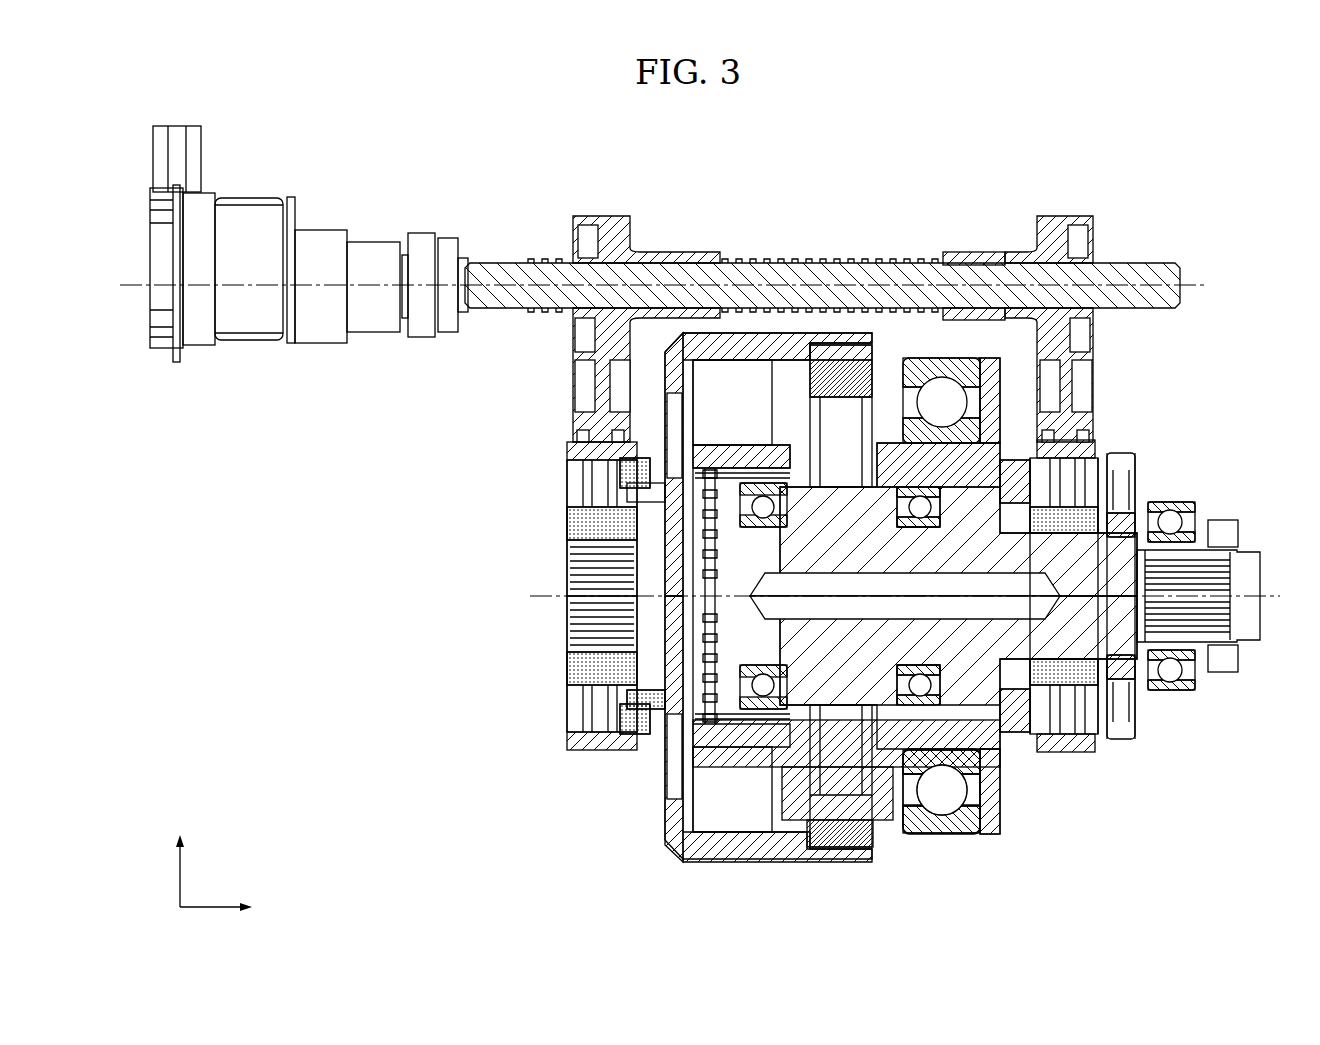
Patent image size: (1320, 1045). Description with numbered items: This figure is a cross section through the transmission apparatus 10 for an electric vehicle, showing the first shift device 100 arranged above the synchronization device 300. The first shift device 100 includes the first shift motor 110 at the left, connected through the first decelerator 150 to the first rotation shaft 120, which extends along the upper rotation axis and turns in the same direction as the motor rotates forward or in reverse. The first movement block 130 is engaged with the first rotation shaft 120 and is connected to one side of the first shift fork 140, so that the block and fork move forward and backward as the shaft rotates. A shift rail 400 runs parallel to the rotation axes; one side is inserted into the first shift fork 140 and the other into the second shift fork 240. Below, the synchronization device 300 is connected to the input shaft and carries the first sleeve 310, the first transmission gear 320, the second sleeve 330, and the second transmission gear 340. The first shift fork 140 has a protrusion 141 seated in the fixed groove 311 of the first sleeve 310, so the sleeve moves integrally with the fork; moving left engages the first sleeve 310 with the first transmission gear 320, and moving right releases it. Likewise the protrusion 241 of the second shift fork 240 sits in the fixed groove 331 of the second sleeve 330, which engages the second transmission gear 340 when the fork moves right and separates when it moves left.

The transmission apparatus 10 is at (1281, 125).
The first shift device 100 is at (738, 210).
The first shift motor 110 is at (243, 210).
The first decelerator 150 is at (376, 248).
The shift rail 400 is at (1122, 268).
The first rotation shaft 120 is at (835, 261).
The second shift fork 240 is at (603, 216).
The protrusion 241 is at (600, 435).
The first movement block 130 is at (985, 254).
The first shift fork 140 is at (1060, 216).
The protrusion 141 is at (1065, 437).
The synchronization device 300 is at (575, 865).
The second sleeve 330 is at (598, 760).
The fixed groove 331 is at (575, 446).
The second transmission gear 340 is at (640, 760).
The first transmission gear 320 is at (1040, 760).
The fixed groove 311 is at (1080, 447).
The first sleeve 310 is at (1080, 765).